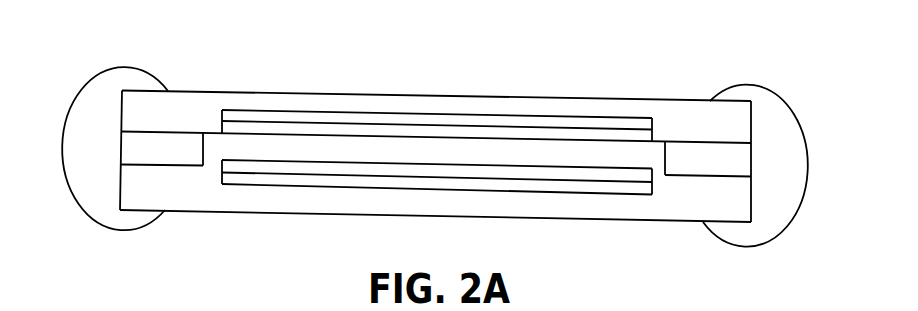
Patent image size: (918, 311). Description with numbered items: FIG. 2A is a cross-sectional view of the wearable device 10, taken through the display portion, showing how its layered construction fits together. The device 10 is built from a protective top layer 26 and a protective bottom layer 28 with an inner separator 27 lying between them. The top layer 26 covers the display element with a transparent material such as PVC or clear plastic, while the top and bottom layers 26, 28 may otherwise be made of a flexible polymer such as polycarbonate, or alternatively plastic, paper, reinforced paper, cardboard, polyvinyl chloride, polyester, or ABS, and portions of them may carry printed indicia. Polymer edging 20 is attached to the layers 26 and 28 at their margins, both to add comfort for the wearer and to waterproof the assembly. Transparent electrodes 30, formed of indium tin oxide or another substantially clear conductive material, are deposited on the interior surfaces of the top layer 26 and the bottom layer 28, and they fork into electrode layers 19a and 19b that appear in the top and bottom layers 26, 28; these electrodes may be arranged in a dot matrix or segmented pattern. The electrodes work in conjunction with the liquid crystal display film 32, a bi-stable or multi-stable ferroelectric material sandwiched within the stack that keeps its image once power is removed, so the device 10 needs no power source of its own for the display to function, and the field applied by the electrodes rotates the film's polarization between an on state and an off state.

The device 10 is at (490, 63).
The electrode layer 19a is at (257, 113).
The electrode layer 19b is at (312, 180).
The polymer edging 20 is at (87, 100).
The top layer 26 is at (673, 110).
The inner separator 27 is at (183, 153).
The bottom layer 28 is at (689, 200).
The transparent electrodes 30 is at (372, 168).
The liquid crystal display film 32 is at (474, 153).